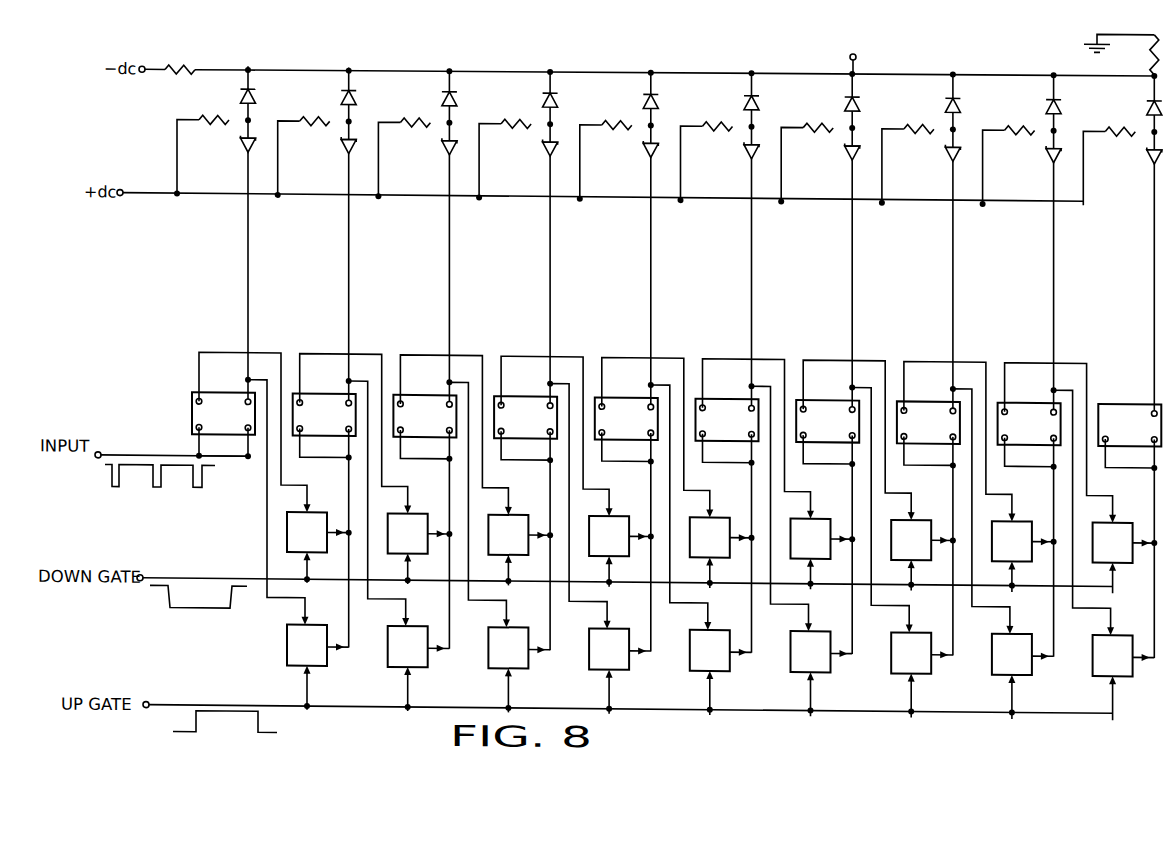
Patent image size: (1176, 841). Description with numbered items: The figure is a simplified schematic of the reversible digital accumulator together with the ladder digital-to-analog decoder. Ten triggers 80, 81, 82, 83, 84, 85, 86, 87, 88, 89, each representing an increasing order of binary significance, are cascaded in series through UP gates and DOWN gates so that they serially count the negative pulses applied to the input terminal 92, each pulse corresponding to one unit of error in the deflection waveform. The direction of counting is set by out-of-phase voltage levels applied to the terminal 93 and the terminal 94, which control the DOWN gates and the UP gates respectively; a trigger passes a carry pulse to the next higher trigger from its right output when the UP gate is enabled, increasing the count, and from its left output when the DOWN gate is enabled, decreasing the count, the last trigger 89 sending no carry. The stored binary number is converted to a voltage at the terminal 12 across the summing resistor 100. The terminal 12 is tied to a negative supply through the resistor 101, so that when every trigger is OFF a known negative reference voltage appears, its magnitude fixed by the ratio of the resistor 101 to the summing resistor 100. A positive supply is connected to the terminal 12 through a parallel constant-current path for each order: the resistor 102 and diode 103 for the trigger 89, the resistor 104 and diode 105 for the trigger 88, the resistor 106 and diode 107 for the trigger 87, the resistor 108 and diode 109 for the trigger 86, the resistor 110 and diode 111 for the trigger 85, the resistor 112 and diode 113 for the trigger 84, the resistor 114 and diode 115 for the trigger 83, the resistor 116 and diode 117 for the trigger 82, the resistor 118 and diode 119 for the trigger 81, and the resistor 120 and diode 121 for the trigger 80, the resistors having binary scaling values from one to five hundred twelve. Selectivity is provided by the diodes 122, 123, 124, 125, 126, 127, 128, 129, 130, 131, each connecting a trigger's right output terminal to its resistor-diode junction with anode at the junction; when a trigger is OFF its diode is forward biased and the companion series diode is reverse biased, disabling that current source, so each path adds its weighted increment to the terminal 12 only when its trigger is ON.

The terminal 12 is at (851, 47).
The trigger 80 is at (223, 423).
The trigger 81 is at (324, 425).
The trigger 82 is at (424, 426).
The trigger 83 is at (525, 427).
The trigger 84 is at (626, 428).
The trigger 85 is at (727, 430).
The trigger 86 is at (827, 431).
The trigger 87 is at (928, 432).
The trigger 88 is at (1029, 434).
The trigger 89 is at (1129, 435).
The input terminal 92 is at (100, 453).
The terminal 93 is at (137, 582).
The terminal 94 is at (146, 708).
The summing resistor 100 is at (1151, 49).
The resistor 101 is at (190, 62).
The resistor 102 is at (1104, 158).
The diode 103 is at (1133, 106).
The resistor 104 is at (1003, 156).
The diode 105 is at (1032, 104).
The resistor 106 is at (902, 155).
The diode 107 is at (931, 103).
The resistor 108 is at (802, 154).
The diode 109 is at (831, 102).
The resistor 110 is at (701, 153).
The diode 111 is at (730, 100).
The resistor 112 is at (600, 151).
The diode 113 is at (629, 99).
The resistor 114 is at (499, 150).
The diode 115 is at (528, 98).
The resistor 116 is at (399, 149).
The diode 117 is at (428, 96).
The resistor 118 is at (298, 147).
The diode 119 is at (327, 95).
The resistor 120 is at (197, 146).
The diode 121 is at (226, 94).
The diode 122 is at (224, 146).
The diode 123 is at (325, 148).
The diode 124 is at (426, 149).
The diode 125 is at (526, 150).
The diode 126 is at (627, 151).
The diode 127 is at (728, 153).
The diode 128 is at (829, 154).
The diode 129 is at (929, 155).
The diode 130 is at (1030, 157).
The diode 131 is at (1131, 158).